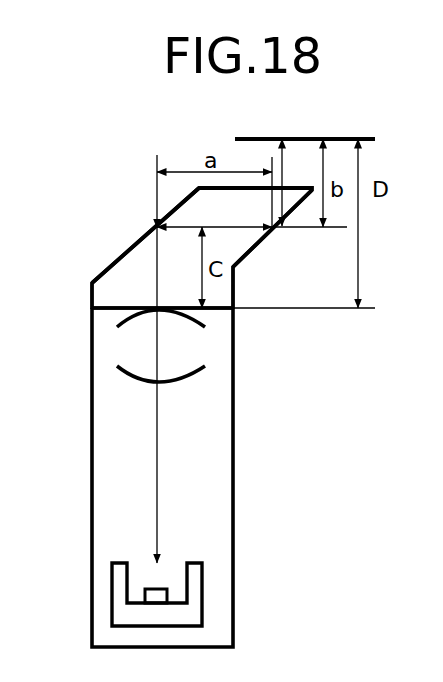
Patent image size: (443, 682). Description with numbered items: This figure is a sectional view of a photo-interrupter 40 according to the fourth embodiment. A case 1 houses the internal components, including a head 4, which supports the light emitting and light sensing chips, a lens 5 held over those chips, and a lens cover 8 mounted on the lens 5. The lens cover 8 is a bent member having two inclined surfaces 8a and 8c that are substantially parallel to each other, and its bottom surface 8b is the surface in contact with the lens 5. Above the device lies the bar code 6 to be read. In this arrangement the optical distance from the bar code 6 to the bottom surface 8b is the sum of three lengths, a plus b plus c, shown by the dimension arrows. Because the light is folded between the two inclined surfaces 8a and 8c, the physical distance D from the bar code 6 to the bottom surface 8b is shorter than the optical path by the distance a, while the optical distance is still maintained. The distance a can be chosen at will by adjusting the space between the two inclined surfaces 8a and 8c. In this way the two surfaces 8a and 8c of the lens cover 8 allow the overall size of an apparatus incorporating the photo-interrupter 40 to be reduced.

The photo-interrupter 40 is at (137, 136).
The case 1 is at (90, 405).
The head 4 is at (112, 592).
The lens 5 is at (195, 348).
The bar code 6 is at (360, 137).
The lens cover 8 is at (92, 283).
The inclined surface 8a is at (108, 268).
The bottom surface 8b is at (112, 311).
The inclined surface 8c is at (260, 244).